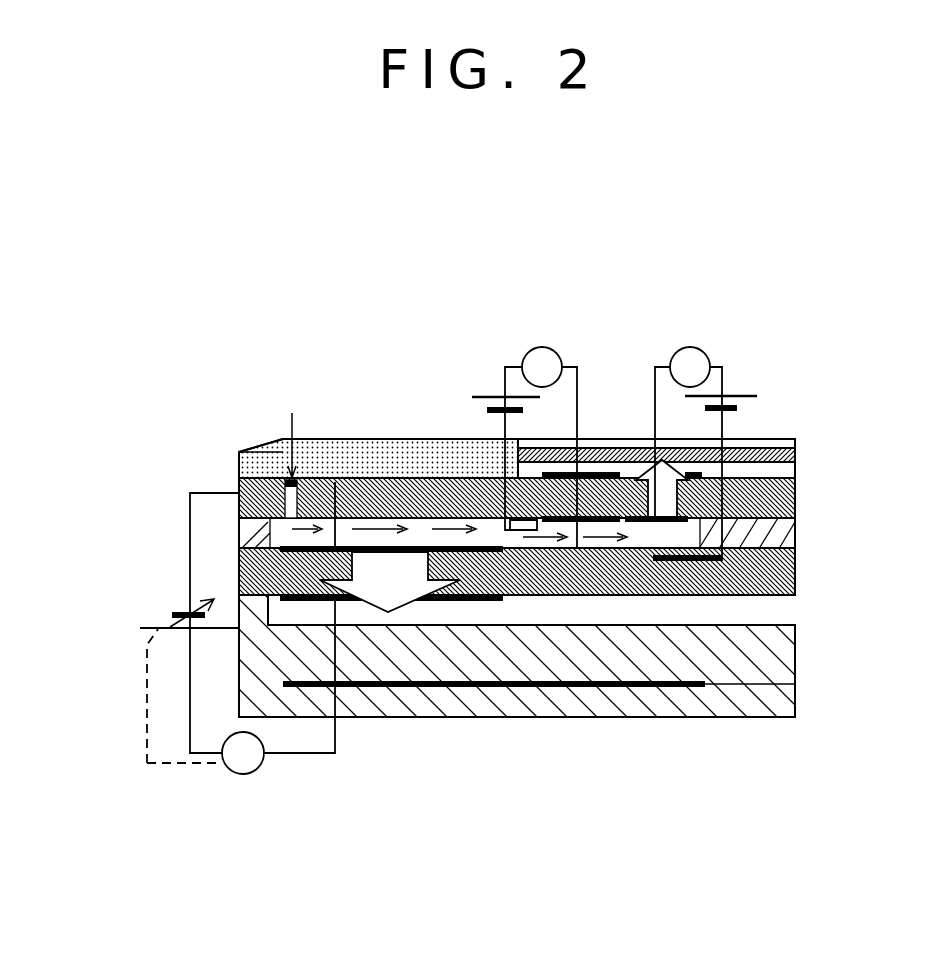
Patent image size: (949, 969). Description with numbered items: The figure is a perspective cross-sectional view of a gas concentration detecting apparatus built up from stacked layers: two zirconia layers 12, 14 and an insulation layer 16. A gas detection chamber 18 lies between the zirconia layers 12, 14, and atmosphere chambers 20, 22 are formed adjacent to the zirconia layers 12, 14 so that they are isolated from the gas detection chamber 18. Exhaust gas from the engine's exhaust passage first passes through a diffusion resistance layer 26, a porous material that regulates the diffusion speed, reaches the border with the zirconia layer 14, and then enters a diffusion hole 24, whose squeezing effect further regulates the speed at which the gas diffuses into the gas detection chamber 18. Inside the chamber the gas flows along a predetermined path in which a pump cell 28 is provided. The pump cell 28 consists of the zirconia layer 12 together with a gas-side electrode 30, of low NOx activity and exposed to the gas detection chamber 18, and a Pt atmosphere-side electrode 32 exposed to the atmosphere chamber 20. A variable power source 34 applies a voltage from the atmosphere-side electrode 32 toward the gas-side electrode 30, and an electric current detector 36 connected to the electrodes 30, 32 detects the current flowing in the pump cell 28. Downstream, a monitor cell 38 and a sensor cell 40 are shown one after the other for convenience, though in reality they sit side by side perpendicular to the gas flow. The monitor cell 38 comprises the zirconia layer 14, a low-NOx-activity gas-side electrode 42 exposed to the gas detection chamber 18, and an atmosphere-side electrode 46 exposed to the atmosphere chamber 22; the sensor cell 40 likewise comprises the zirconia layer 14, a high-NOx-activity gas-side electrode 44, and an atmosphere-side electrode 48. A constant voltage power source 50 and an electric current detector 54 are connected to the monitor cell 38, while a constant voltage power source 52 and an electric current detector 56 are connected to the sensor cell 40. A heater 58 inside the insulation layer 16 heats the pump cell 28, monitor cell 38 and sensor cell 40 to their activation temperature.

The zirconia layer 12 is at (807, 545).
The zirconia layer 14 is at (805, 473).
The insulation layer 16 is at (808, 623).
The gas detection chamber 18 is at (690, 535).
The atmosphere chamber 20 is at (765, 608).
The atmosphere chamber 22 is at (787, 463).
The diffusion hole 24 is at (240, 473).
The diffusion resistance layer 26 is at (280, 470).
The pump cell 28 is at (410, 706).
The gas-side electrode 30 is at (505, 552).
The atmosphere-side electrode 32 is at (470, 601).
The variable power source 34 is at (173, 612).
The electric current detector 36 is at (243, 774).
The monitor cell 38 is at (596, 386).
The sensor cell 40 is at (758, 429).
The gas-side electrode 42 is at (620, 515).
The gas-side electrode 44 is at (690, 518).
The atmosphere-side electrode 46 is at (607, 470).
The atmosphere-side electrode 48 is at (702, 472).
The constant voltage power source 50 is at (482, 395).
The constant voltage power source 52 is at (737, 447).
The electric current detector 54 is at (545, 347).
The electric current detector 56 is at (690, 347).
The heater 58 is at (665, 687).